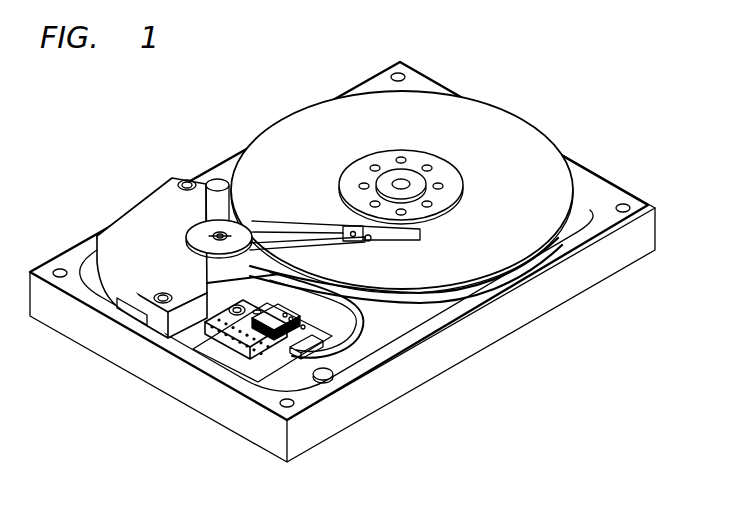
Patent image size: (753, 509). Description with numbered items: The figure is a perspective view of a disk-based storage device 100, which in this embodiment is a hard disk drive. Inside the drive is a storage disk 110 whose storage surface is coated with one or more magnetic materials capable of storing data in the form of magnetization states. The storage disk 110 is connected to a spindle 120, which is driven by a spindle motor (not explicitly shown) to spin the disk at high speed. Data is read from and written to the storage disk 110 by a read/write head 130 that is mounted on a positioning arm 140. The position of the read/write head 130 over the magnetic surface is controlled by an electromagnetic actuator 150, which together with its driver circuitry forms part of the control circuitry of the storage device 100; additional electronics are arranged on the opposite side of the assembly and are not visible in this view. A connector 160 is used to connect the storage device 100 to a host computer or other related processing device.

The disk-based storage device 100 is at (146, 105).
The storage disk 110 is at (505, 124).
The spindle 120 is at (420, 178).
The read/write head 130 is at (395, 237).
The positioning arm 140 is at (277, 227).
The electromagnetic actuator 150 is at (127, 223).
The connector 160 is at (230, 350).